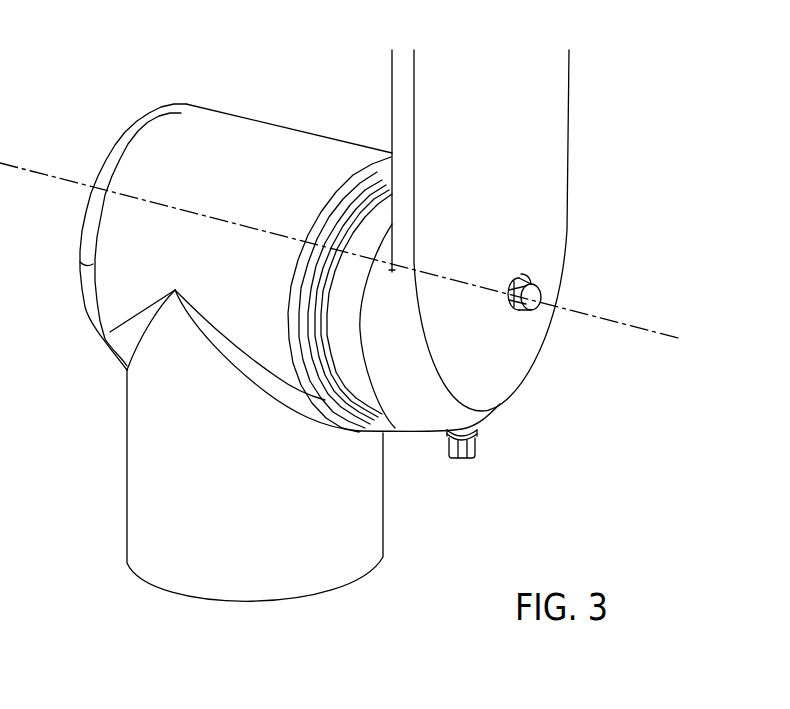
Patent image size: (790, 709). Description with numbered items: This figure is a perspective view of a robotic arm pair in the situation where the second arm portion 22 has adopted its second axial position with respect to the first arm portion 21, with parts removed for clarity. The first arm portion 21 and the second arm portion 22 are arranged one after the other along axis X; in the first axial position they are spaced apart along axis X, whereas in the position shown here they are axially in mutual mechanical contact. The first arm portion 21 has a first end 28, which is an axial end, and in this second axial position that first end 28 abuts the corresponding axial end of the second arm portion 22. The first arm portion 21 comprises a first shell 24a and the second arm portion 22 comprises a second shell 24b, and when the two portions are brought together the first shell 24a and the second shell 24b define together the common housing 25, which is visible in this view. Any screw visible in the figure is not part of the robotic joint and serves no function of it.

The first arm portion 21 is at (127, 128).
The second arm portion 22 is at (571, 139).
The first shell 24a is at (233, 125).
The second shell 24b is at (418, 412).
The common housing 25 is at (367, 187).
The first end 28 is at (338, 213).
The axis X is at (660, 337).